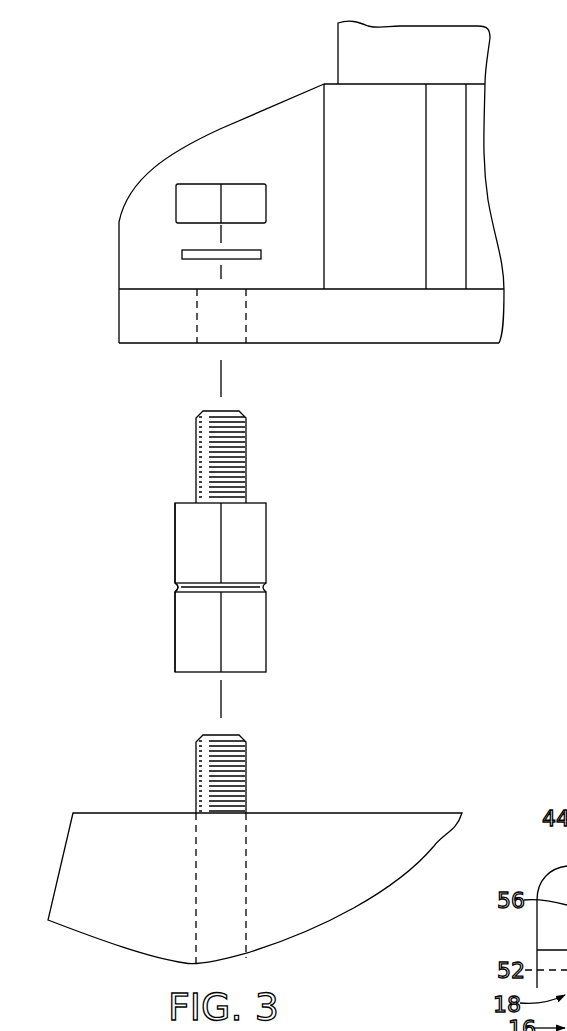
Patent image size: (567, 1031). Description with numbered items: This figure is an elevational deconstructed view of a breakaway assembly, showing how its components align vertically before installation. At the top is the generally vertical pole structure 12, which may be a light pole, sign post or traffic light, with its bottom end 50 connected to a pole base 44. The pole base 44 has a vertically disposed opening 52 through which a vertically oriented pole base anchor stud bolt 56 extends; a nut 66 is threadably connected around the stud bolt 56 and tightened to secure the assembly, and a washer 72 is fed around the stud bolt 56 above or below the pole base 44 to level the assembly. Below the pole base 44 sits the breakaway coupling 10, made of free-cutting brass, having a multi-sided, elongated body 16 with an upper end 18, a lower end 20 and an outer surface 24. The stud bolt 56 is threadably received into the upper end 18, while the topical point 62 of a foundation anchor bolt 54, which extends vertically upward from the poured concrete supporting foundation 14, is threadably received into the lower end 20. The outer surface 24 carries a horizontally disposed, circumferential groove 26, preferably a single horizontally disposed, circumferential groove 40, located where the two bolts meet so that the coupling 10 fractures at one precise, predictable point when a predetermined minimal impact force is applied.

The breakaway coupling 10 is at (240, 551).
The generally vertical pole structure 12 is at (499, 42).
The supporting foundation 14 is at (62, 840).
The multi-sided, elongated body 16 is at (268, 645).
The upper end 18 is at (174, 502).
The lower end 20 is at (174, 673).
The outer surface 24 is at (174, 551).
The horizontally disposed, circumferential groove 26 is at (174, 589).
The single horizontally disposed, circumferential groove 40 is at (271, 585).
The pole base 44 is at (129, 186).
The bottom end 50 is at (336, 52).
The vertically disposed openings 52 is at (248, 312).
The foundation anchor bolts 54 is at (195, 889).
The vertically oriented pole base anchor stud bolt 56 is at (249, 438).
The topical point 62 is at (233, 733).
The nut 66 is at (241, 181).
The washer 72 is at (197, 248).